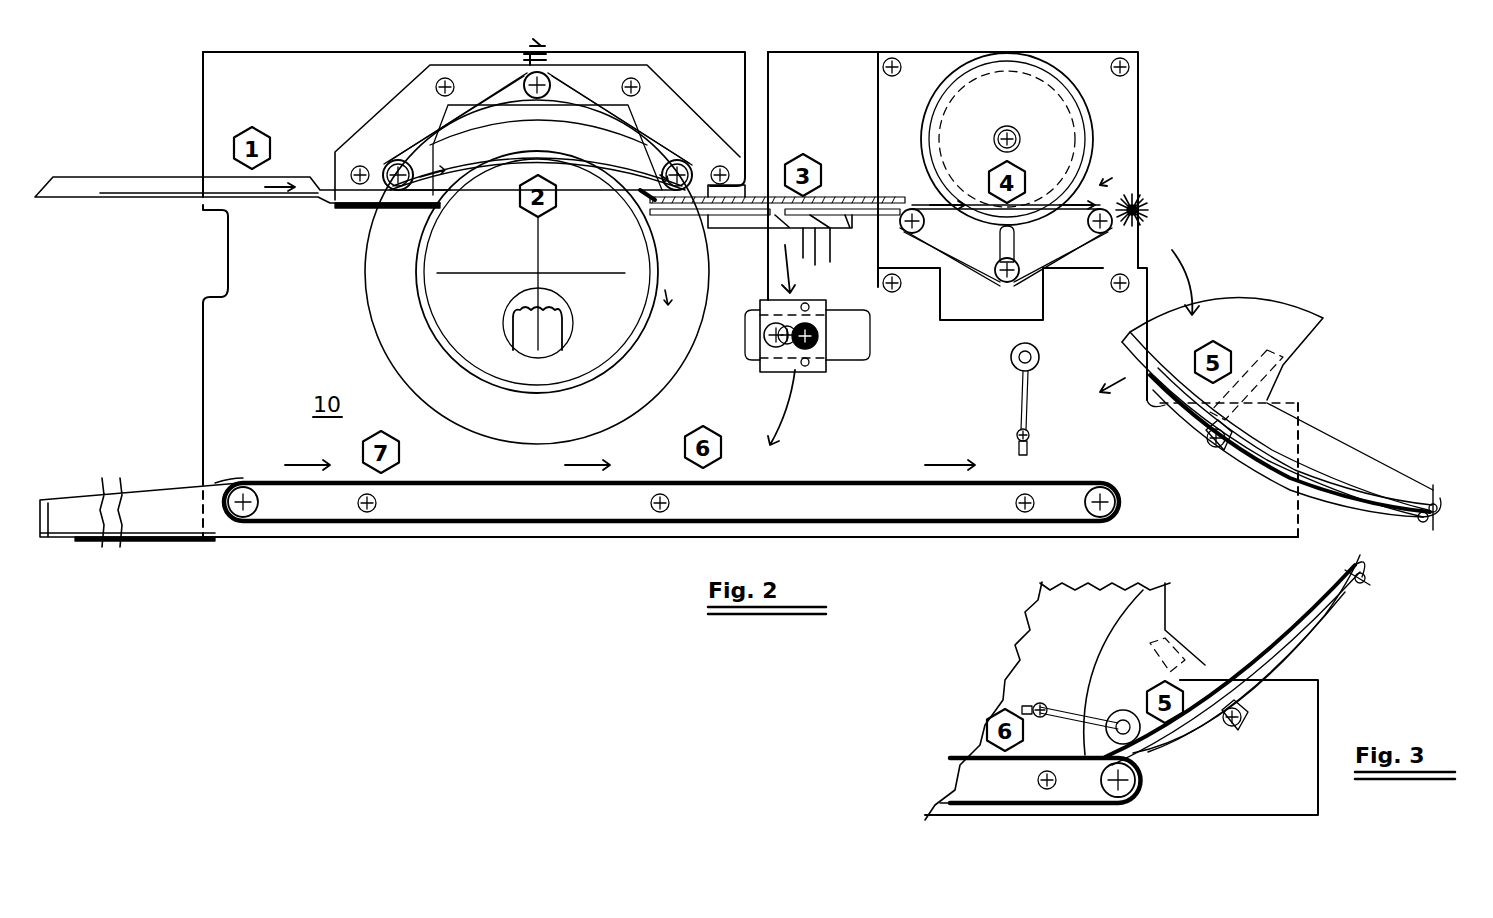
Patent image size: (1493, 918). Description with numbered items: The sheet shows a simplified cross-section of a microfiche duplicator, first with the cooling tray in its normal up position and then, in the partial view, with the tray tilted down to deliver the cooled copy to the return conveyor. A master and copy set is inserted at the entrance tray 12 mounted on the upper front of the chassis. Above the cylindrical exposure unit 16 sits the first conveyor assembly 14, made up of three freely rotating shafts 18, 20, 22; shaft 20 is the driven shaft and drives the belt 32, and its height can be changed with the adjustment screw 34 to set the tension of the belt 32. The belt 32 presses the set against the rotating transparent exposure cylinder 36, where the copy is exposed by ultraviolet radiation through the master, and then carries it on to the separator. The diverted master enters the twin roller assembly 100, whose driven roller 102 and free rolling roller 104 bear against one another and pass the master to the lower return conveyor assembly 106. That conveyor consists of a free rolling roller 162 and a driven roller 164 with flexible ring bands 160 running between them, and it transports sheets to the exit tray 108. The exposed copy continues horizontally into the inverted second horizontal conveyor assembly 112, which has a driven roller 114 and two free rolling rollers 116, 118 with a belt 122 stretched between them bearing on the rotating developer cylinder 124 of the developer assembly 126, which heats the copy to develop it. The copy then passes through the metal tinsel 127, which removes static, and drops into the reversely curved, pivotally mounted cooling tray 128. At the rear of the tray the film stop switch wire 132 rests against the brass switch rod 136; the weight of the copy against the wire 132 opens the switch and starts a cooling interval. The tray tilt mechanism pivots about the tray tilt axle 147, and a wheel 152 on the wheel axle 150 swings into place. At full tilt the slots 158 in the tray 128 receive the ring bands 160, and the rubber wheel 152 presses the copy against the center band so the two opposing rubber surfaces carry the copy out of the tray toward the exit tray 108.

In FIG. 2, the entrance tray 12 is at (135, 205).
In FIG. 2, the first conveyor assembly 14 is at (615, 75).
In FIG. 2, the exposure unit 16 is at (432, 248).
In FIG. 2, the shaft 18 is at (412, 158).
In FIG. 2, the shaft 20 is at (548, 98).
In FIG. 2, the shaft 22 is at (658, 158).
In FIG. 2, the belt 32 is at (415, 160).
In FIG. 2, the adjustment screw 34 is at (545, 35).
In FIG. 2, the exposure cylinder 36 is at (418, 300).
In FIG. 2, the twin roller assembly 100 is at (820, 372).
In FIG. 2, the driven roller 102 is at (807, 323).
In FIG. 2, the free rolling roller 104 is at (775, 345).
In FIG. 2, the lower return conveyor assembly 106 is at (330, 515).
In FIG. 2, the exit tray 108 is at (55, 540).
In FIG. 2, the second horizontal conveyor assembly 112 is at (1123, 182).
In FIG. 2, the driven roller 114 is at (1112, 230).
In FIG. 2, the free rolling roller 116 is at (1000, 262).
In FIG. 2, the free rolling roller 118 is at (924, 233).
In FIG. 2, the belt 122 is at (1040, 268).
In FIG. 2, the developer cylinder 124 is at (1093, 120).
In FIG. 2, the developer assembly 126 is at (1060, 148).
In FIG. 2, the metal tinsel 127 is at (1145, 207).
In FIG. 2, the cooling tray 128 is at (1310, 340).
In FIG. 3, the cooling tray 128 is at (1320, 640).
In FIG. 2, the film stop switch wire 132 is at (1440, 485).
In FIG. 3, the film stop switch wire 132 is at (1357, 577).
In FIG. 2, the brass switch rod 136 is at (1415, 524).
In FIG. 2, the tray tilt axle 147 is at (1205, 432).
In FIG. 2, the wheel axle 150 is at (1017, 434).
In FIG. 3, the wheel axle 150 is at (1045, 702).
In FIG. 2, the wheel 152 is at (1010, 372).
In FIG. 3, the wheel 152 is at (1122, 710).
In FIG. 3, the slots 158 is at (1150, 745).
In FIG. 2, the ring bands 160 is at (985, 540).
In FIG. 3, the ring bands 160 is at (975, 755).
In FIG. 2, the free rolling roller 162 is at (262, 525).
In FIG. 2, the roller 164 is at (1120, 497).
In FIG. 3, the roller 164 is at (1140, 784).